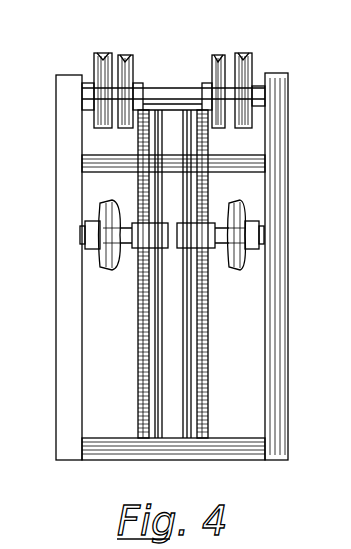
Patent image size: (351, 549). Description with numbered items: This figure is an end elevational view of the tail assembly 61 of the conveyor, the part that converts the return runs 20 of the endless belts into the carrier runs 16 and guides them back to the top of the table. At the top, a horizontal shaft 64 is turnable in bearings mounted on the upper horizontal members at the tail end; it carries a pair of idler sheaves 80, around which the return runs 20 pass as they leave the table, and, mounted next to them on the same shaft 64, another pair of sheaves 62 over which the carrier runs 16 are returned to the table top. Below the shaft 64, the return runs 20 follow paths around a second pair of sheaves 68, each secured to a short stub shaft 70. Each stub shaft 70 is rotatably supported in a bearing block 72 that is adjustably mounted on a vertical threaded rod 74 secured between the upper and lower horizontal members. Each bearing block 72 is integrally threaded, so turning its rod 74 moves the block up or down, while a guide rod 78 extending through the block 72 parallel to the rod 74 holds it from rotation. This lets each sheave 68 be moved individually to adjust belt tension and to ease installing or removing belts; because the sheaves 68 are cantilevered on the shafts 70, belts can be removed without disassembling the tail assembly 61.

The carrier runs 16 is at (100, 53).
The return runs 20 is at (125, 55).
The tail assembly 61 is at (296, 175).
The sheaves 62 is at (95, 72).
The shaft 64 is at (158, 90).
The sheaves 68 is at (98, 268).
The stub shaft 70 is at (224, 218).
The bearing block 72 is at (193, 240).
The threaded rod 74 is at (136, 408).
The guide rod 78 is at (157, 402).
The idler sheaves 80 is at (134, 82).